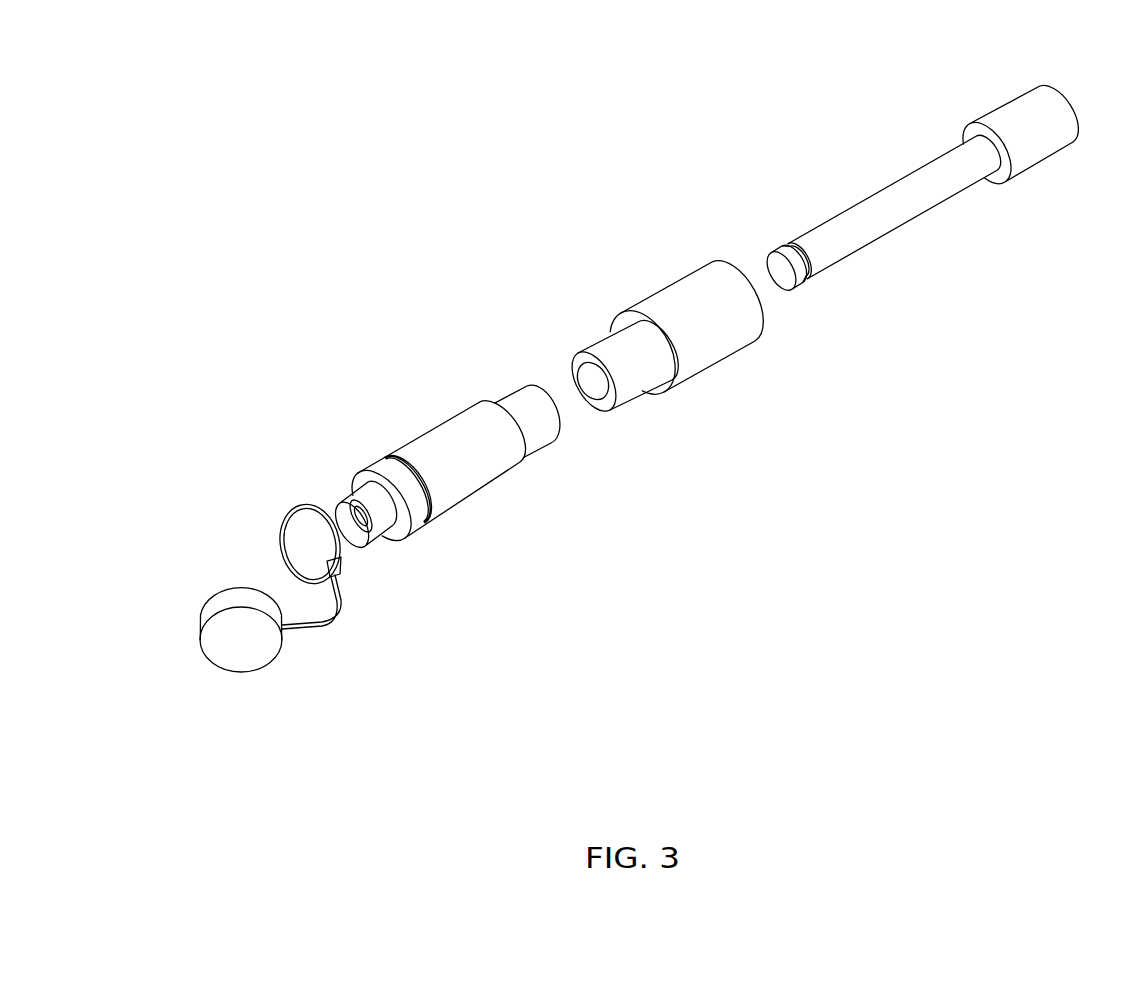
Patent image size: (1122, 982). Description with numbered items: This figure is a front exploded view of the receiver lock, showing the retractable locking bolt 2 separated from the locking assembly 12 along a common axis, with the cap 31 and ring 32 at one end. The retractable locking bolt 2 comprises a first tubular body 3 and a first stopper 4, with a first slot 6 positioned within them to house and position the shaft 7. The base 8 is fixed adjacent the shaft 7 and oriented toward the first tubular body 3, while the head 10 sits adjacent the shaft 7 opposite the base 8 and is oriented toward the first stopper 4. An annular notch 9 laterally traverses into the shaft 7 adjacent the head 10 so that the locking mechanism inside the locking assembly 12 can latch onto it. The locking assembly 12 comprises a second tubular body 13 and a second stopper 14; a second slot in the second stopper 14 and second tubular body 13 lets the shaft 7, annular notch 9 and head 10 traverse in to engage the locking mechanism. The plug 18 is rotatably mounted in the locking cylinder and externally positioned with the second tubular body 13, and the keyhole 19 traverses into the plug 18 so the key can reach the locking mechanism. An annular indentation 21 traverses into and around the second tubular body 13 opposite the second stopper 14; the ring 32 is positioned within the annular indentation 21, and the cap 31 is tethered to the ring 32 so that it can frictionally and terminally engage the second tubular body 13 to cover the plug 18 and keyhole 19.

The retractable locking bolt 2 is at (679, 347).
The first tubular body 3 is at (762, 325).
The first stopper 4 is at (638, 382).
The first slot 6 is at (596, 377).
The shaft 7 is at (940, 195).
The base 8 is at (968, 128).
The annular notch 9 is at (808, 276).
The head 10 is at (778, 268).
The locking assembly 12 is at (447, 510).
The second tubular body 13 is at (516, 464).
The second stopper 14 is at (553, 428).
The plug 18 is at (340, 503).
The keyhole 19 is at (361, 517).
The annular indentation 21 is at (424, 524).
The cap 31 is at (203, 621).
The ring 32 is at (282, 530).